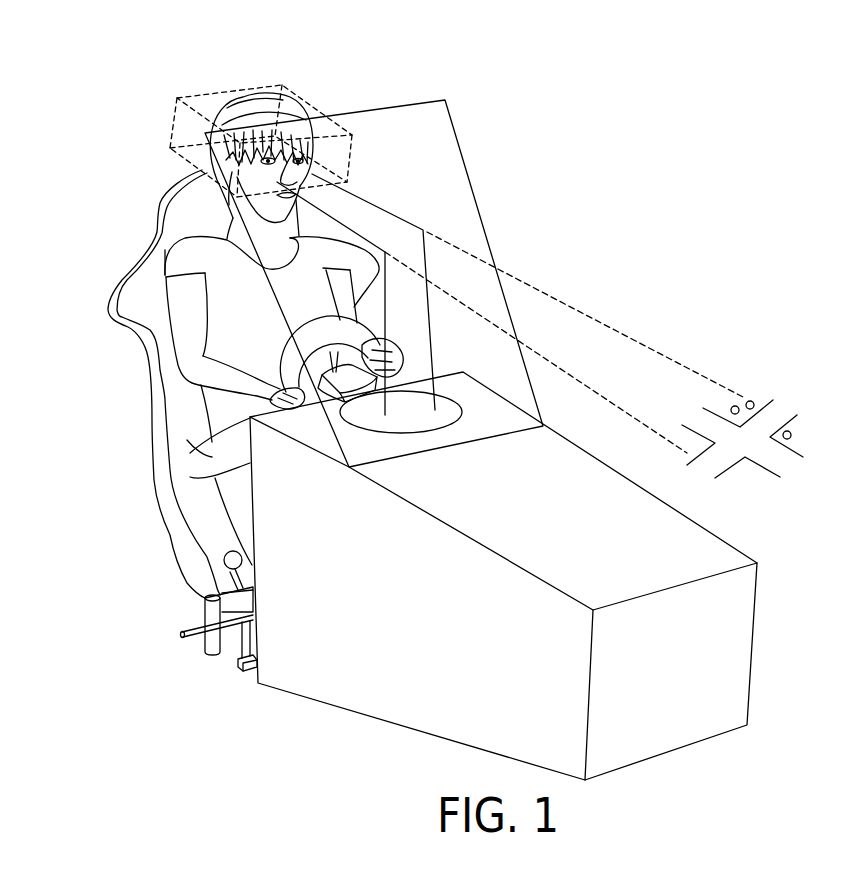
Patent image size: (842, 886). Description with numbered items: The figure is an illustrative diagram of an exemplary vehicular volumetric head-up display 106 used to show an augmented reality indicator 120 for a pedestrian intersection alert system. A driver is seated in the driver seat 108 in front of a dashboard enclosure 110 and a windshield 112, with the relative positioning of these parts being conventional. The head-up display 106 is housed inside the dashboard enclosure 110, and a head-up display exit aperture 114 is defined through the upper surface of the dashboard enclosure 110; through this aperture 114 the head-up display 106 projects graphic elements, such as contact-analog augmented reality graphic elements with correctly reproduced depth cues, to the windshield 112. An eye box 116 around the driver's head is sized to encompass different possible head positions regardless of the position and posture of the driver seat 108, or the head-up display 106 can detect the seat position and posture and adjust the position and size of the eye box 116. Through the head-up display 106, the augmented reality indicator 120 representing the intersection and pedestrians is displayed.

The head-up display 106 is at (614, 112).
The driver seat 108 is at (132, 268).
The dashboard enclosure 110 is at (182, 447).
The windshield 112 is at (480, 213).
The head-up display exit aperture 114 is at (455, 408).
The eye box 116 is at (298, 100).
The augmented reality indicator 120 is at (784, 394).